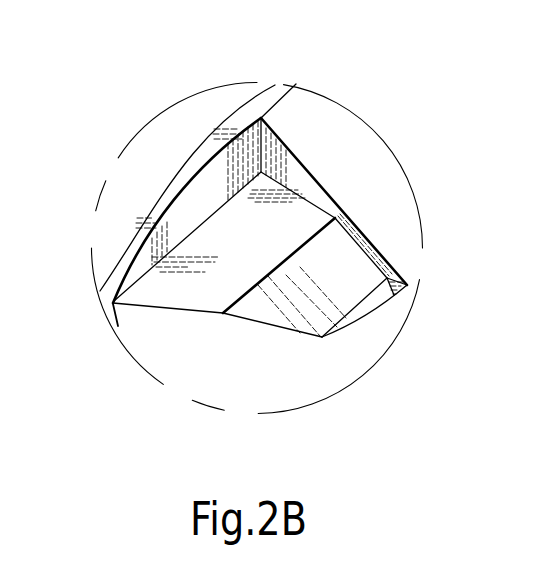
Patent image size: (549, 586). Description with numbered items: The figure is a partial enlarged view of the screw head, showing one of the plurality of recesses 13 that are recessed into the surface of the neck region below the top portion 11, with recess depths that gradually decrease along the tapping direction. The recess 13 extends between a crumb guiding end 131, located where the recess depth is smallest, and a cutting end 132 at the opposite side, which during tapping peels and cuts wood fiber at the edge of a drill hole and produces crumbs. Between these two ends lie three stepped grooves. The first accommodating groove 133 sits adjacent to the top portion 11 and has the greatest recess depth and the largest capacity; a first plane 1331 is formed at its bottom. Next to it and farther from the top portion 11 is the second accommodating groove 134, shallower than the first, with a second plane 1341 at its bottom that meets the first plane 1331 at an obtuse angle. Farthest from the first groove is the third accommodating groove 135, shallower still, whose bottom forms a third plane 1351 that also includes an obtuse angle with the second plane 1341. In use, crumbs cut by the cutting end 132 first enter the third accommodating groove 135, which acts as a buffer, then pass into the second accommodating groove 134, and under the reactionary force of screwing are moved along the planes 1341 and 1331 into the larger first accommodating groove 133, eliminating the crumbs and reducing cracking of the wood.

The top portion 11 is at (185, 189).
The recess 13 is at (266, 245).
The crumb guiding end 131 is at (160, 312).
The cutting end 132 is at (313, 171).
The first accommodating groove 133 is at (283, 188).
The first plane 1331 is at (223, 243).
The second accommodating groove 134 is at (377, 248).
The second plane 1341 is at (266, 318).
The third accommodating groove 135 is at (372, 317).
The third plane 1351 is at (350, 322).